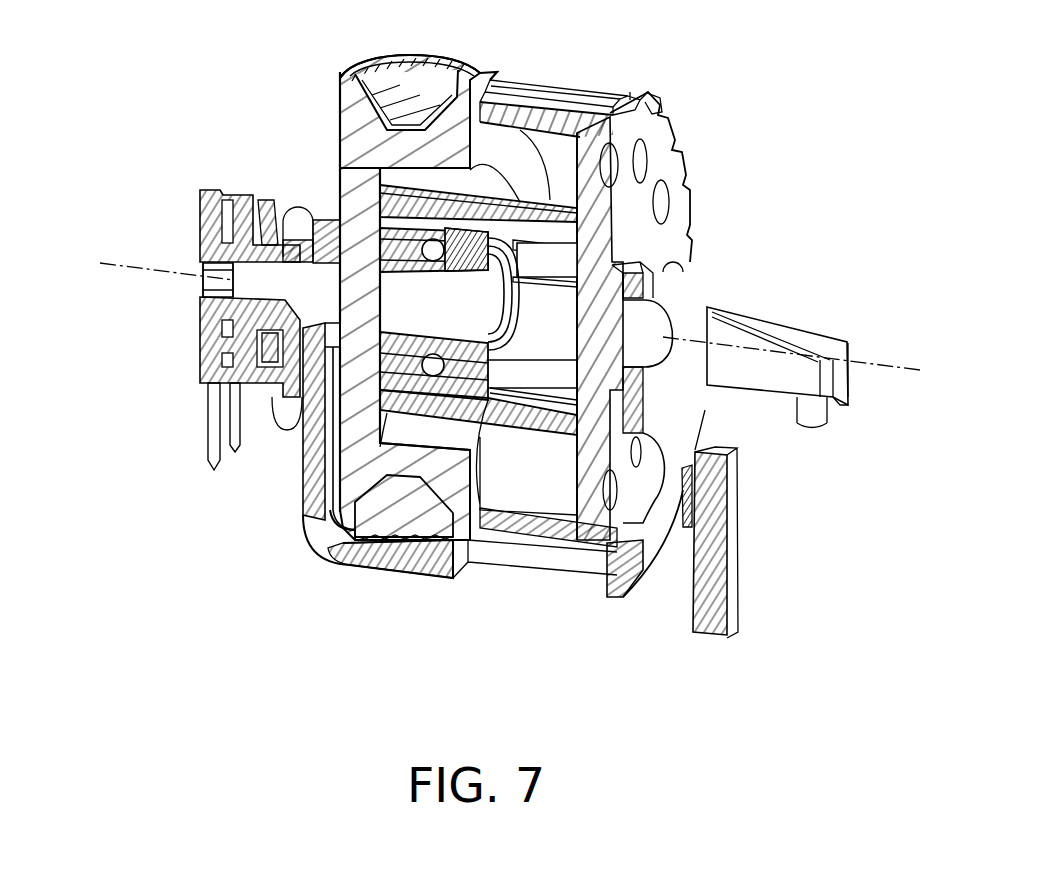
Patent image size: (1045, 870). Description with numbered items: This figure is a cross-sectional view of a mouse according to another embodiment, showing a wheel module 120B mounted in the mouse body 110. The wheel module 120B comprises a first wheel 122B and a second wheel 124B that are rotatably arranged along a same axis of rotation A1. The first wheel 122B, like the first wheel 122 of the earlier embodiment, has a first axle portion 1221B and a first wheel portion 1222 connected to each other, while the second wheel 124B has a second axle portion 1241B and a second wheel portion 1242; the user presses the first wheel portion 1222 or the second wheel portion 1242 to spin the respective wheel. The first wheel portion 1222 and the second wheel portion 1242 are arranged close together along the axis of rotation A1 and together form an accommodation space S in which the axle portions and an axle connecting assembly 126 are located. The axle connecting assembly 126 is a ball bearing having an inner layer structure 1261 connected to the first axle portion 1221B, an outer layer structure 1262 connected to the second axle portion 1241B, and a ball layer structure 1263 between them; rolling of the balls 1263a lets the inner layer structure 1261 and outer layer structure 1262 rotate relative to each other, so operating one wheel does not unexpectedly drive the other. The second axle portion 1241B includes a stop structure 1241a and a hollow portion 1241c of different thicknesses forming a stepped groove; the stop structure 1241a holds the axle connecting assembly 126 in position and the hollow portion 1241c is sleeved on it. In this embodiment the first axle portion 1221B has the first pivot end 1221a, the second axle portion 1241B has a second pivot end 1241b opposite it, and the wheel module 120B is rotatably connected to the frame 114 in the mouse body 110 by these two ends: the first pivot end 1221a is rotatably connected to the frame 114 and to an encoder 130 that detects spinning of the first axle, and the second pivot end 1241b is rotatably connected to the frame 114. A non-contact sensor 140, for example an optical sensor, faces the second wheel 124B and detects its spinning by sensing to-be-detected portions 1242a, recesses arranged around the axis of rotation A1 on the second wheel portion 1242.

The second axle portion 1241B is at (340, 72).
The second wheel 124B is at (426, 299).
The balls 1263a is at (453, 213).
The axle connecting assembly 126 is at (322, 287).
The inner layer structure 1261 is at (400, 240).
The ball layer structure 1263 is at (385, 224).
The outer layer structure 1262 is at (488, 229).
The encoder 130 is at (245, 230).
The first pivot end 1221a is at (247, 290).
The hollow portion 1241c is at (415, 372).
The first wheel portion 1222 is at (419, 269).
The first wheel 122B is at (410, 67).
The second wheel portion 1242 is at (578, 93).
The wheel module 120B is at (658, 84).
The accommodation space S is at (558, 175).
The stop structure 1241a is at (500, 237).
The to-be-detected portions 1242a is at (660, 204).
The first axle portion 1221B is at (525, 297).
The first wheel 122 is at (423, 308).
The second pivot end 1241b is at (650, 325).
The axis of rotation A1 is at (890, 360).
The frame 114 is at (776, 389).
The mouse body 110 is at (690, 415).
The non-contact sensor 140 is at (687, 503).